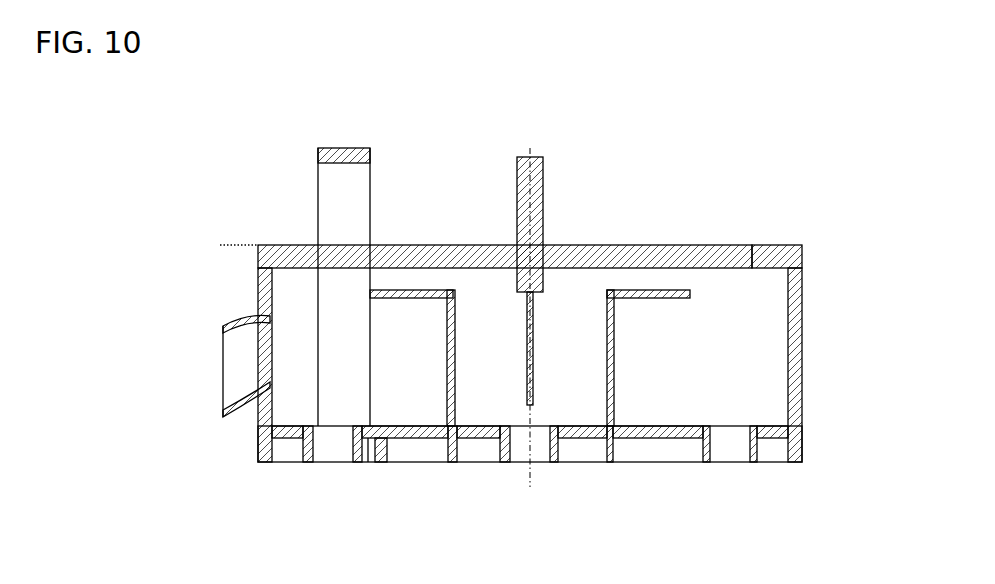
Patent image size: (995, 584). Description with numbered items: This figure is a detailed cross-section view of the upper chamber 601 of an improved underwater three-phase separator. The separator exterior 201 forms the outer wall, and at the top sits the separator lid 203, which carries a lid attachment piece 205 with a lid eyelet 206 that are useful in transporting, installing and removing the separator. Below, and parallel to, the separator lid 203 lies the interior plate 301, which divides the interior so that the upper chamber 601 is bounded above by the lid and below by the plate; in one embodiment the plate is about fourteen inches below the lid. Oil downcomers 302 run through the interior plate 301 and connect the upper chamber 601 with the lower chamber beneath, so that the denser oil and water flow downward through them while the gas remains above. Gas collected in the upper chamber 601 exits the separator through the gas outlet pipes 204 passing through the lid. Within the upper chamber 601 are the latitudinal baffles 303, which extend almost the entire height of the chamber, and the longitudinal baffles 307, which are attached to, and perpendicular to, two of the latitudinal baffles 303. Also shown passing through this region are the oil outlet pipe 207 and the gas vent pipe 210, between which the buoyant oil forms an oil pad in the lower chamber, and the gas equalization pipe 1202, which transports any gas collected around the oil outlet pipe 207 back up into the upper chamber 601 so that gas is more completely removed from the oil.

The separator exterior 201 is at (268, 289).
The separator lid 203 is at (652, 252).
The gas outlet pipes 204 is at (740, 255).
The lid attachment piece 205 is at (535, 155).
The lid eyelet 206 is at (545, 183).
The oil outlet pipe 207 is at (318, 157).
The gas vent pipe 210 is at (233, 326).
The interior plate 301 is at (775, 433).
The oil downcomers 302 is at (330, 443).
The latitudinal baffles 303 is at (531, 380).
The longitudinal baffles 307 is at (385, 292).
The upper chamber 601 is at (745, 357).
The gas equalization pipe 1202 is at (381, 450).